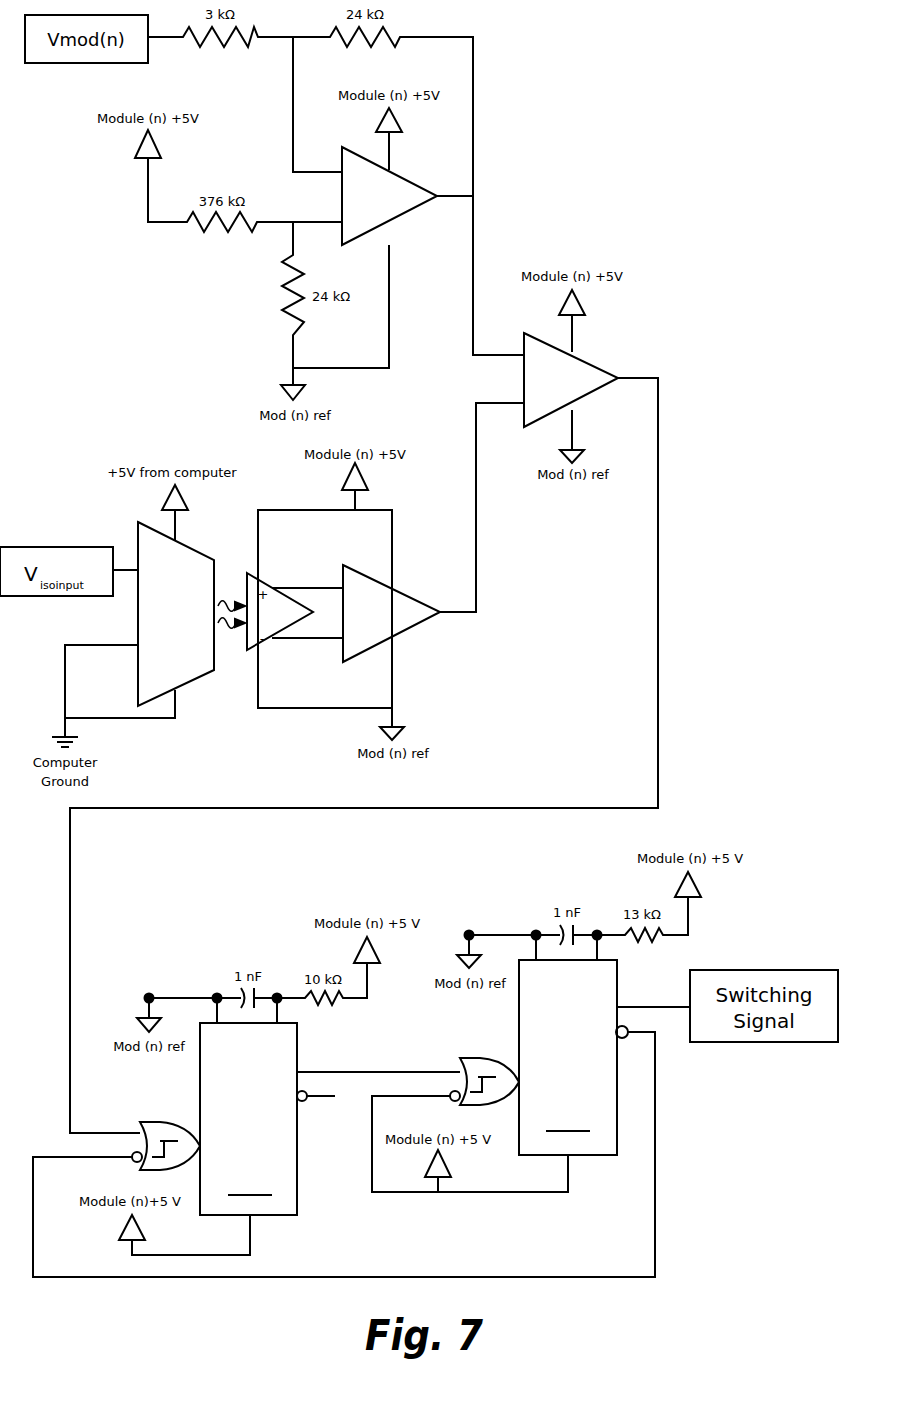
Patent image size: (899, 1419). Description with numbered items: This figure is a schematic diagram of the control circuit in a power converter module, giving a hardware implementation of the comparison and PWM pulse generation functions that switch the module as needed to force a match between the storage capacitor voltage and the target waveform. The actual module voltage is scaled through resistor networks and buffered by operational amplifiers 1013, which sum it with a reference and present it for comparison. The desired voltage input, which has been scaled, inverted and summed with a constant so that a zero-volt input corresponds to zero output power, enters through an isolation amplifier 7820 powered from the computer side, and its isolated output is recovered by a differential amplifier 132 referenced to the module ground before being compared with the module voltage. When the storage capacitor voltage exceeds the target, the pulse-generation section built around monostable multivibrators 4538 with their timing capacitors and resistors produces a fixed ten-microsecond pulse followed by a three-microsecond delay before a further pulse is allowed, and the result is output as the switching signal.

The OPA1013 operational amplifier (A and B) 1013 is at (480, 287).
The HCPL-7820 isolation amplifier 7820 is at (176, 614).
The INA132 differential amplifier 132 is at (391, 613).
The CD4538 monostable multivibrator (U4a, U4b) 4538 is at (408, 1088).